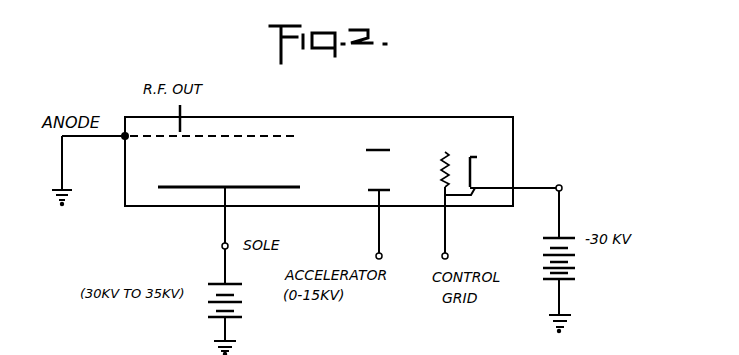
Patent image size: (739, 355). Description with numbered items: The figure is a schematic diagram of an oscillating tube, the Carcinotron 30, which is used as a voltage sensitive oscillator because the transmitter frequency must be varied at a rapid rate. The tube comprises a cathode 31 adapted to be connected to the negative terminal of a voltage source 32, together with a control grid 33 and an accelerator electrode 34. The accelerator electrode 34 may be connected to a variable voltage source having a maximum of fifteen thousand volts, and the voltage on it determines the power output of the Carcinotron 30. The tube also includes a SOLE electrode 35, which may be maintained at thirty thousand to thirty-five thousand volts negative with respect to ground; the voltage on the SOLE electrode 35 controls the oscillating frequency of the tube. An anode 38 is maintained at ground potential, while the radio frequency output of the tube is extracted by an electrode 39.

The Carcinotron 30 is at (376, 117).
The cathode 31 is at (476, 173).
The voltage source 32 is at (572, 279).
The control grid 33 is at (441, 163).
The accelerator electrode 34 is at (380, 148).
The SOLE electrode 35 is at (199, 168).
The anode 38 is at (248, 136).
The electrode 39 is at (182, 110).